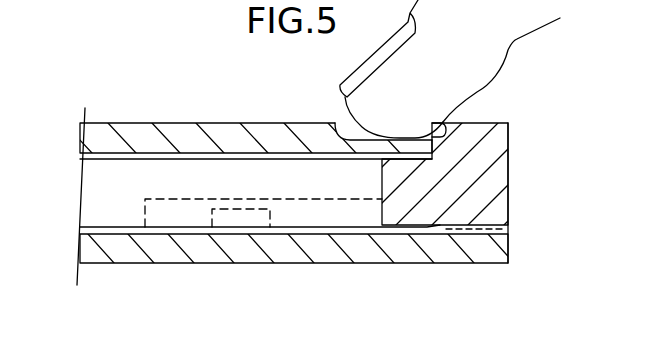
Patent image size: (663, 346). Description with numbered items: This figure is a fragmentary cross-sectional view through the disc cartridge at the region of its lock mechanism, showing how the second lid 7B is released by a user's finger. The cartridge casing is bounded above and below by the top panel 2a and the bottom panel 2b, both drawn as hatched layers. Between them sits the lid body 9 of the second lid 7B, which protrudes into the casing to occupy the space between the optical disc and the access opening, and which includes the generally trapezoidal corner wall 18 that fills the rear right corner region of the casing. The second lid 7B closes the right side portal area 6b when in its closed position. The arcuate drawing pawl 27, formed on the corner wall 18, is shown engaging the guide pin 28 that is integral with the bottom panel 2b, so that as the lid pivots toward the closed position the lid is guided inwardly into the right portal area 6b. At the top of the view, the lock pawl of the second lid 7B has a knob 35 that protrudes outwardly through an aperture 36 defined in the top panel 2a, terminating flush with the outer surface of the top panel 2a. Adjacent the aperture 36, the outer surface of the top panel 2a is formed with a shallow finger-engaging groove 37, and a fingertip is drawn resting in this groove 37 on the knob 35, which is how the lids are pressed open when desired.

The top panel 2a is at (141, 123).
The bottom panel 2b is at (132, 263).
The lid body 9 is at (223, 157).
The finger-engaging groove 37 is at (343, 110).
The aperture 36 is at (432, 122).
The knob 35 is at (491, 123).
The right side portal area 6b is at (478, 225).
The second lid 7B is at (90, 201).
The drawing pawl 27 is at (165, 199).
The guide pin 28 is at (238, 217).
The corner wall 18 is at (327, 210).